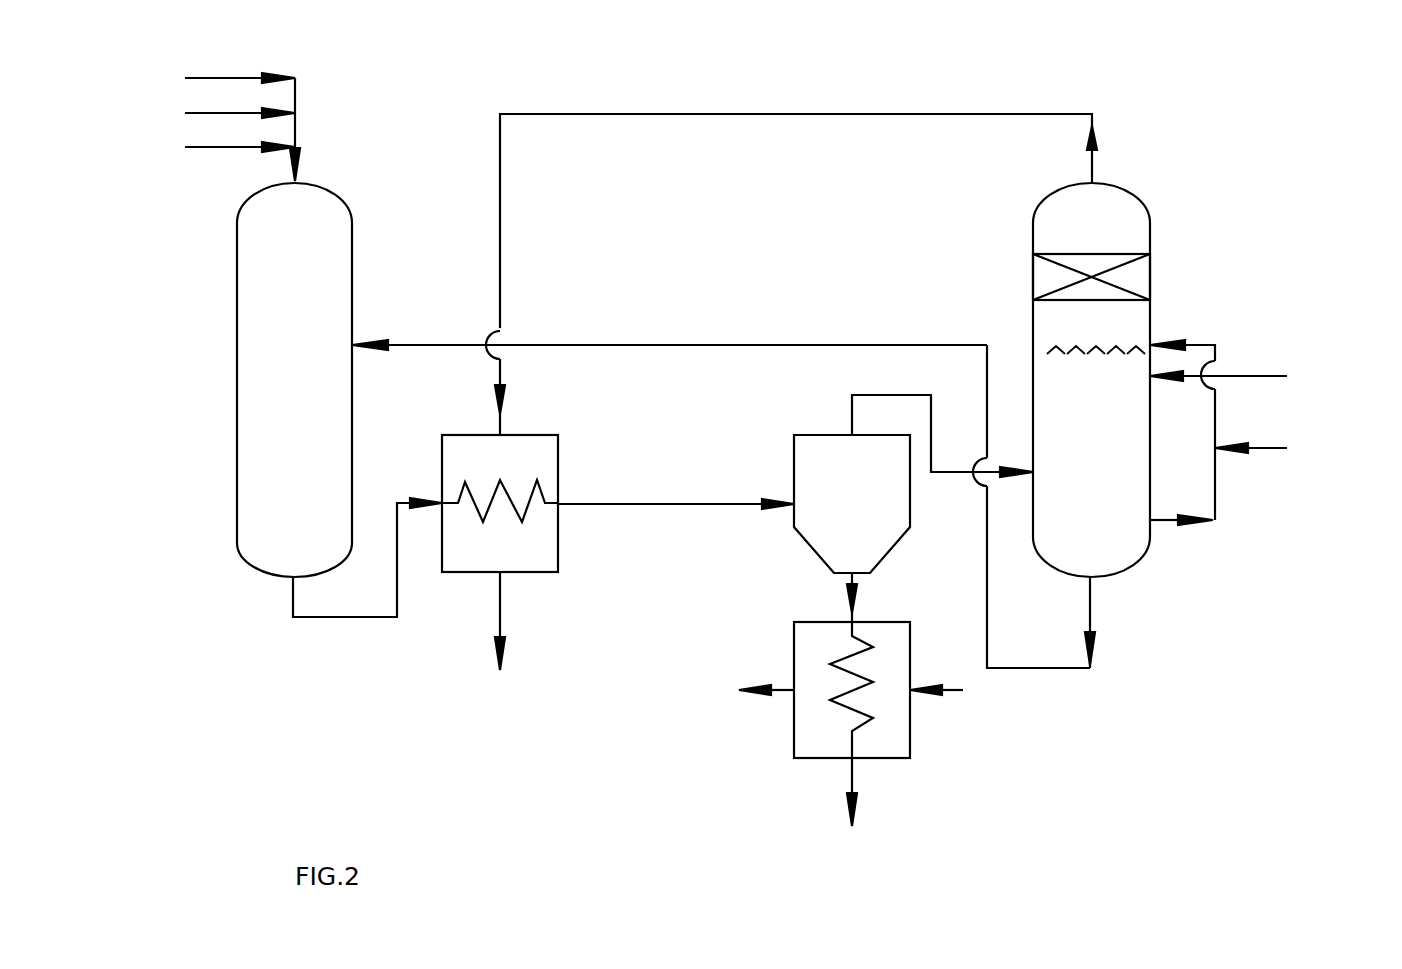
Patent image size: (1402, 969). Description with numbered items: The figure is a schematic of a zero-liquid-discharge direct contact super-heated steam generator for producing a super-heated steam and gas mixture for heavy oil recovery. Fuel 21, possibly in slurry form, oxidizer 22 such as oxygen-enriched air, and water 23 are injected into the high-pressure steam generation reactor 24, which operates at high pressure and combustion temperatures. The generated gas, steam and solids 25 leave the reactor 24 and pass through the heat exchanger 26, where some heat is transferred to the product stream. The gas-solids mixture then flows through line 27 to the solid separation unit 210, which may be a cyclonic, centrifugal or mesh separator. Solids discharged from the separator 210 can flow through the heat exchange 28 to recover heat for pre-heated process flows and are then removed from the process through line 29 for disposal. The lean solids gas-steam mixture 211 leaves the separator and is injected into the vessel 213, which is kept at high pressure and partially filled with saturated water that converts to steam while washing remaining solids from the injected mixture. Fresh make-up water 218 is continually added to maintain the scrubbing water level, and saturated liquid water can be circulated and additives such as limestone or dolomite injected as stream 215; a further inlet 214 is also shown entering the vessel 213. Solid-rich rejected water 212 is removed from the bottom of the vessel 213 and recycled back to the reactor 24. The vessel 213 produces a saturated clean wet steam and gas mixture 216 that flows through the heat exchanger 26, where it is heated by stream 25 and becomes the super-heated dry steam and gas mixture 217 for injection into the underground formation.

The fuel 21 is at (214, 120).
The oxidizer 22 is at (211, 107).
The water 23 is at (211, 141).
The high-pressure steam generation reactor 24 is at (328, 207).
The generated gas, steam and solids 25 is at (338, 618).
The heat exchanger 26 is at (523, 560).
The line 27 is at (626, 504).
The heat exchange 28 is at (805, 730).
The line 29 is at (850, 778).
The solid separation unit 210 is at (837, 557).
The lean solids gas-steam mixture 211 is at (920, 395).
The rejected water 212 is at (1038, 670).
The vessel 213 is at (1113, 552).
The feed to column 214 is at (1257, 376).
The circulated saturated liquid water and additives 215 is at (1290, 448).
The saturated clean wet steam and gas mixture 216 is at (837, 114).
The super-heated dry steam and gas mixture 217 is at (493, 635).
The fresh make-up water 218 is at (1215, 493).